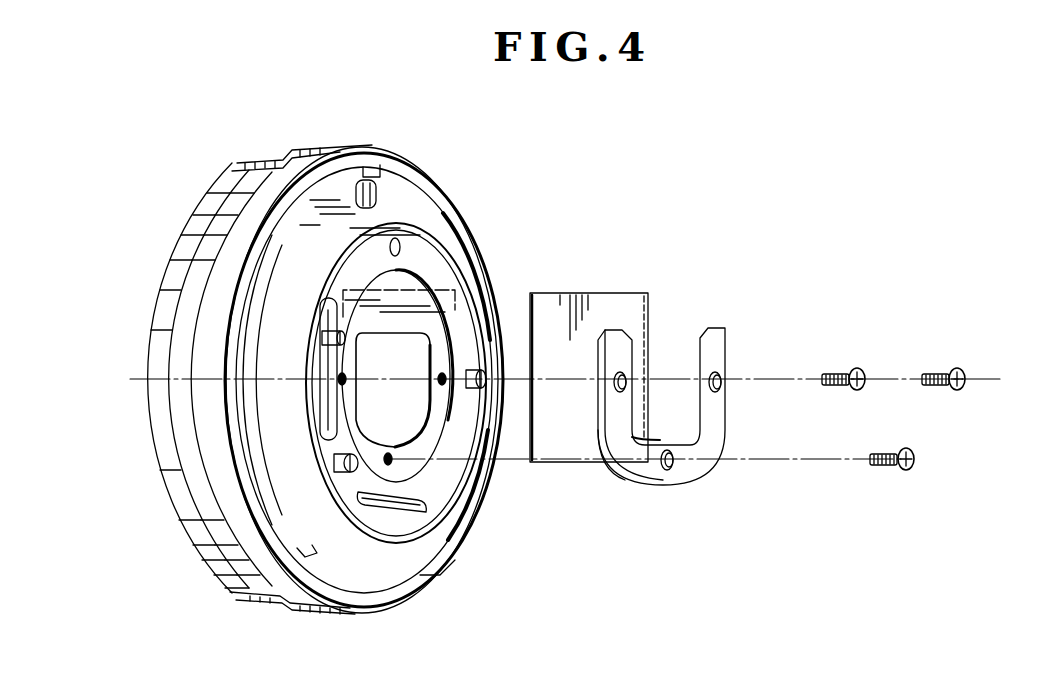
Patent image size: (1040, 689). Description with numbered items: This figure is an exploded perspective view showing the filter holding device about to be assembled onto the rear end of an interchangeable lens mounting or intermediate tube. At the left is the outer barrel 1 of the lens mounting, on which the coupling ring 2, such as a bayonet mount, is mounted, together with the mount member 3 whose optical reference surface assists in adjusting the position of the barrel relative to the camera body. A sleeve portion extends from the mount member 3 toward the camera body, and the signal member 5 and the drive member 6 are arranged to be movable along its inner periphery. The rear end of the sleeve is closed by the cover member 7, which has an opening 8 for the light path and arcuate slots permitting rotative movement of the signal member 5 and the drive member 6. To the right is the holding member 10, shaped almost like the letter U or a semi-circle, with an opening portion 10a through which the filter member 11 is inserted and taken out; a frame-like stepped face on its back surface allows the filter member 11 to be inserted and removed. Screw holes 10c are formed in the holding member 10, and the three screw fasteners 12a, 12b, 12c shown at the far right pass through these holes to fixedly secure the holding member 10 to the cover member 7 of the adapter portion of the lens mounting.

The outer barrel 1 is at (300, 166).
The coupling ring 2 is at (265, 265).
The mount member 3 is at (353, 560).
The signal member 5 is at (343, 340).
The drive member 6 is at (395, 505).
The cover member 7 is at (443, 470).
The opening 8 is at (400, 407).
The holding member 10 is at (697, 472).
The opening portion 10a is at (672, 330).
The screw holes 10c is at (722, 372).
The filter member 11 is at (625, 300).
The screw fastener 12a is at (860, 370).
The screw fastener 12b is at (965, 368).
The screw fastener 12c is at (910, 472).